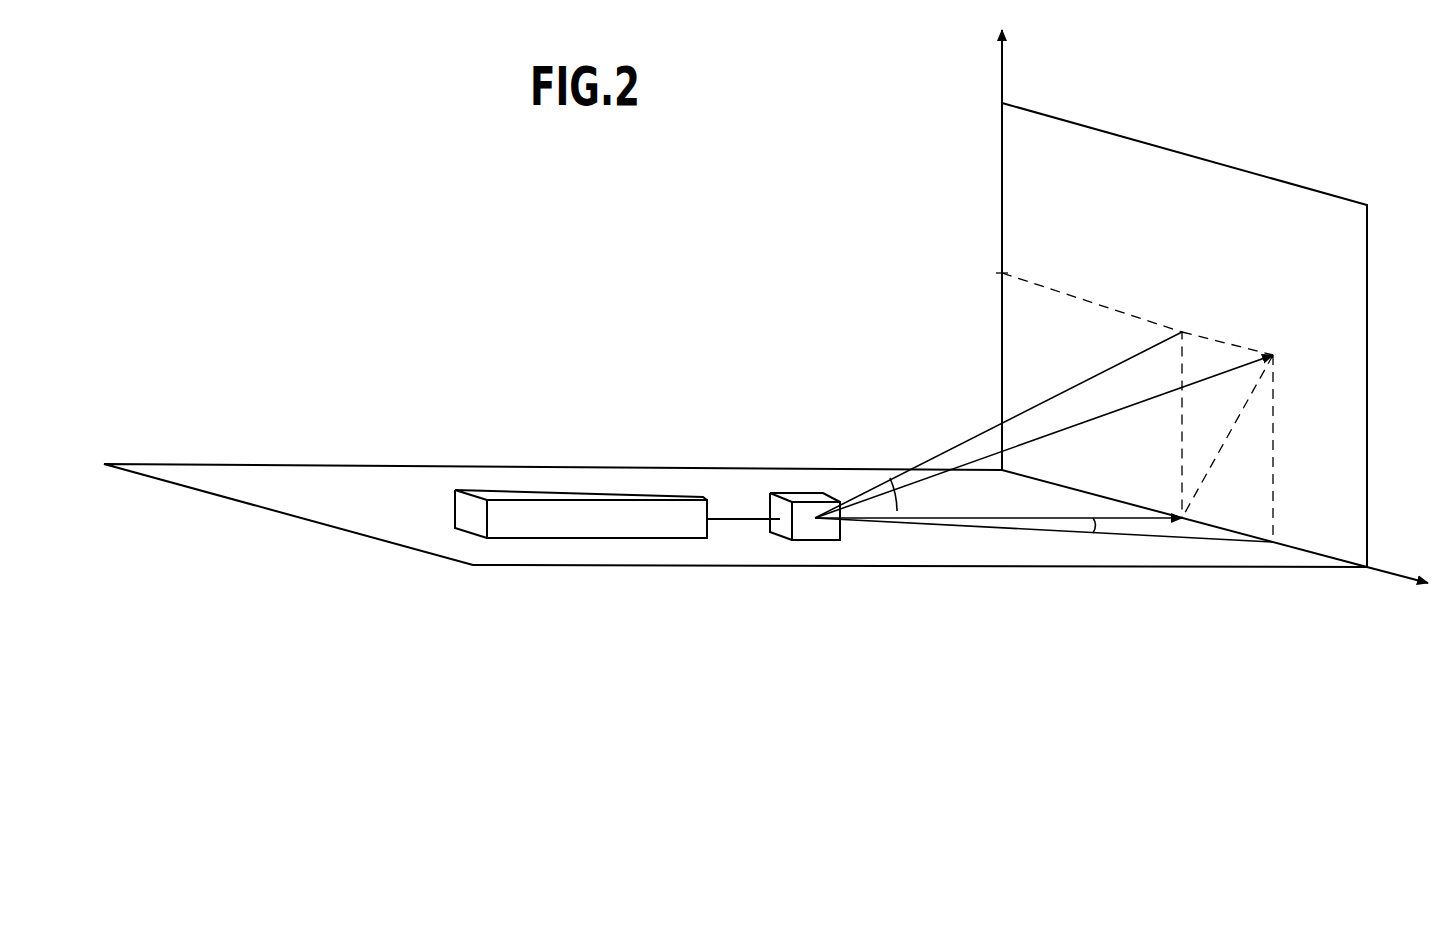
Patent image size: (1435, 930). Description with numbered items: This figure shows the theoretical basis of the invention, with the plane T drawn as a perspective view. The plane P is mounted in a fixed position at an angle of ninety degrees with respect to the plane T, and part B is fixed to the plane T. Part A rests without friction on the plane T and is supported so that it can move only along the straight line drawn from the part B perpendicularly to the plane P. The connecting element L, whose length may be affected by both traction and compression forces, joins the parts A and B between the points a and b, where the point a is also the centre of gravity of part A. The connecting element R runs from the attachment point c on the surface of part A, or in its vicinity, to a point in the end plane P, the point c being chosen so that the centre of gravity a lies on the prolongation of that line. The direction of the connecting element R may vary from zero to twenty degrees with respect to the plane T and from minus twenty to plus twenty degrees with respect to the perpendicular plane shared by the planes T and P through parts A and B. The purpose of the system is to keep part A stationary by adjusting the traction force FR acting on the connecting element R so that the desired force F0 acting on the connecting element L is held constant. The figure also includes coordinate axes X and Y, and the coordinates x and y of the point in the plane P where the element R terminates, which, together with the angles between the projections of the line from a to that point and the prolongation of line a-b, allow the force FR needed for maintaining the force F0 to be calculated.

The plane T is at (292, 478).
The part B is at (502, 518).
The connecting element L is at (727, 517).
The part A is at (773, 495).
The point a is at (813, 523).
The point b is at (710, 527).
The attachment point c is at (850, 512).
The X axis X is at (986, 244).
The Y axis Y is at (1400, 562).
The x coordinate x is at (1124, 386).
The y coordinate y is at (1059, 526).
The plane P is at (1175, 197).
The connecting element R is at (1063, 428).
The traction force FR is at (1044, 436).
The force FO F0 is at (953, 518).